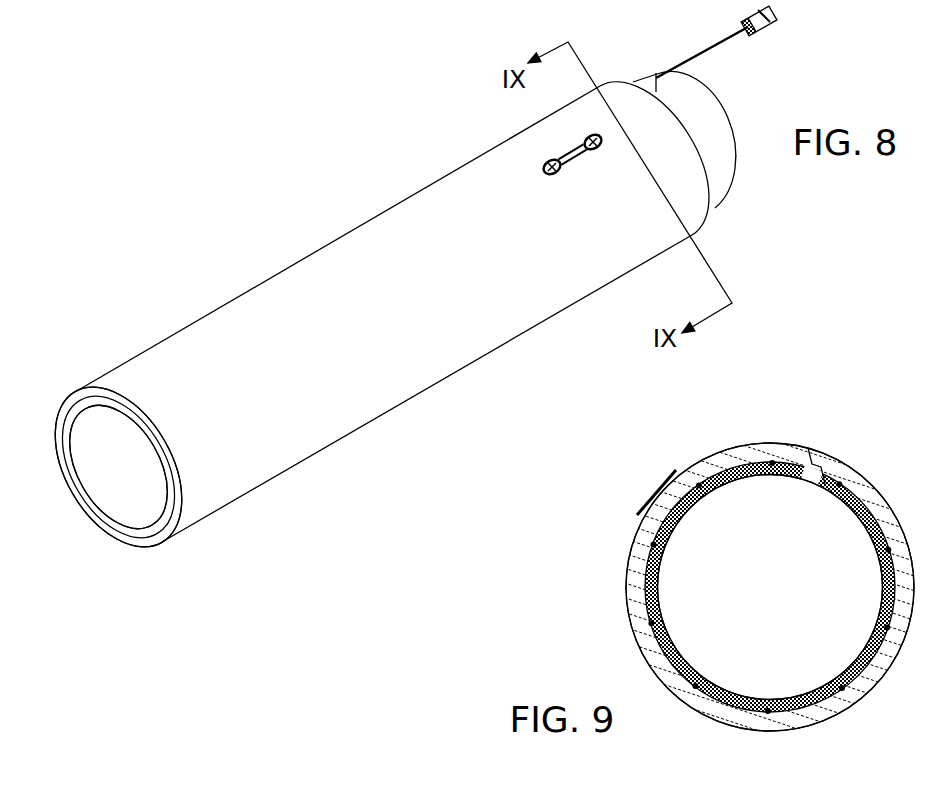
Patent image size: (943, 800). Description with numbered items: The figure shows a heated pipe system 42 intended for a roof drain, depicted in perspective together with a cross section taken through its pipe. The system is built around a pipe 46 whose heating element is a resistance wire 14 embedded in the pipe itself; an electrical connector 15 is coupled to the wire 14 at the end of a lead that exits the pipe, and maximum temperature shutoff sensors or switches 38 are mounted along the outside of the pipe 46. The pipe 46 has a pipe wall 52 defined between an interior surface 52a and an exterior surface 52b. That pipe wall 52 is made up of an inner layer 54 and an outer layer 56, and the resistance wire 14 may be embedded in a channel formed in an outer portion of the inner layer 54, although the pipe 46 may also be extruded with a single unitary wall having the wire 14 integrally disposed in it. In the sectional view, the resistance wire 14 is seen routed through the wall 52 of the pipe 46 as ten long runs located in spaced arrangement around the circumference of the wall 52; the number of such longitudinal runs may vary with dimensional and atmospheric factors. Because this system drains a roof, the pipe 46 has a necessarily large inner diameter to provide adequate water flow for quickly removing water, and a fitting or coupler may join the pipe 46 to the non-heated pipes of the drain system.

In FIG. 8, the heated pipe system 42 is at (423, 285).
In FIG. 8, the pipe 46 is at (337, 260).
In FIG. 8, the outer layer 56 is at (61, 413).
In FIG. 9, the outer layer 56 is at (628, 591).
In FIG. 8, the inner layer 54 is at (68, 430).
In FIG. 9, the inner layer 54 is at (657, 590).
In FIG. 8, the pipe wall 52 is at (78, 515).
In FIG. 9, the pipe wall 52 is at (826, 484).
In FIG. 8, the interior surface 52a is at (157, 512).
In FIG. 9, the interior surface 52a is at (860, 522).
In FIG. 8, the exterior surface 52b is at (183, 508).
In FIG. 9, the exterior surface 52b is at (707, 455).
In FIG. 8, the maximum temperature shutoff sensors or switches 38 is at (544, 164).
In FIG. 9, the maximum temperature shutoff sensors or switches 38 is at (650, 517).
In FIG. 8, the resistance wire 14 is at (693, 58).
In FIG. 9, the resistance wire 14 is at (772, 462).
In FIG. 8, the electrical connector 15 is at (770, 20).